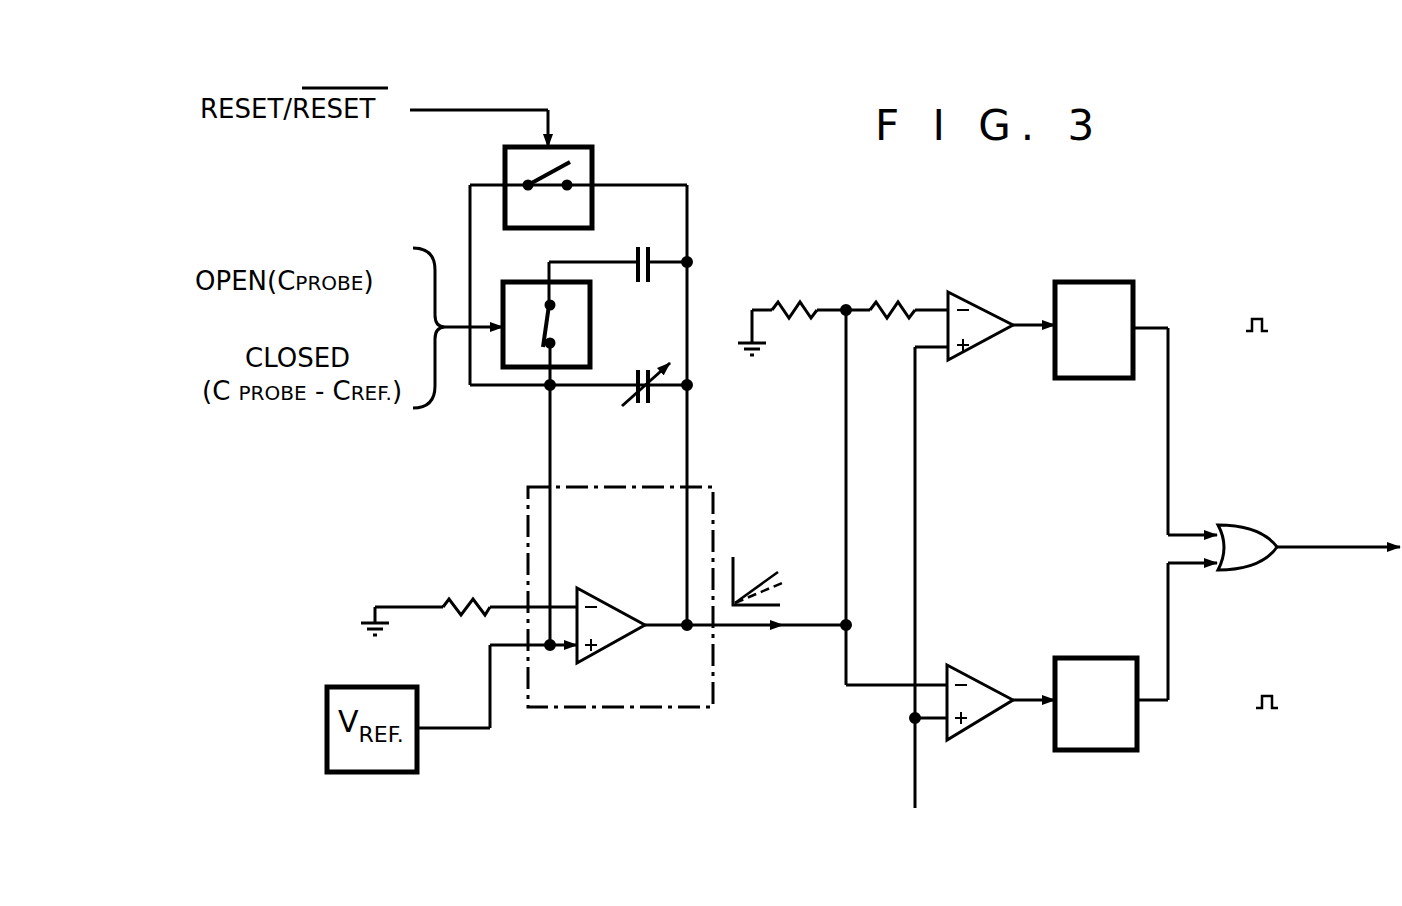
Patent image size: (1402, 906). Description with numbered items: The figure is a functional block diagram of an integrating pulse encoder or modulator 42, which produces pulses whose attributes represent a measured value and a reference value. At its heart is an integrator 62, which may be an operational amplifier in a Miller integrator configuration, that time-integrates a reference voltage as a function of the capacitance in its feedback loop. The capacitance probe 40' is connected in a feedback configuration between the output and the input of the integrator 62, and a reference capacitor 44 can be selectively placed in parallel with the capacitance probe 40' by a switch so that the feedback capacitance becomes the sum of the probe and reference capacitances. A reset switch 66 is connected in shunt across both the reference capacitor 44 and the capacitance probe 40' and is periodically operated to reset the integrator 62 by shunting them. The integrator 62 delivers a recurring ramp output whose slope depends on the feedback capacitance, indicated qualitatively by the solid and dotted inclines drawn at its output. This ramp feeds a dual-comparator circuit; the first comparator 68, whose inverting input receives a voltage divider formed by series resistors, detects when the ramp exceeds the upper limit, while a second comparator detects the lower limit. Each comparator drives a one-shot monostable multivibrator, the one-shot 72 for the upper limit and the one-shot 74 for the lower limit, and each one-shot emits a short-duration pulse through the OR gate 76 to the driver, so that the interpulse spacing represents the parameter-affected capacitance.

The reset switch 66 is at (580, 143).
The reference capacitor 44 is at (652, 258).
The capacitance probe 40' is at (706, 394).
The integrating pulse encoder 42 is at (843, 460).
The integrator 62 is at (713, 527).
The first comparator 68 is at (987, 313).
The one-shot monostable multivibrator 72 is at (1093, 282).
The one-shot monostable multivibrator 74 is at (1092, 658).
The OR gate 76 is at (1260, 545).